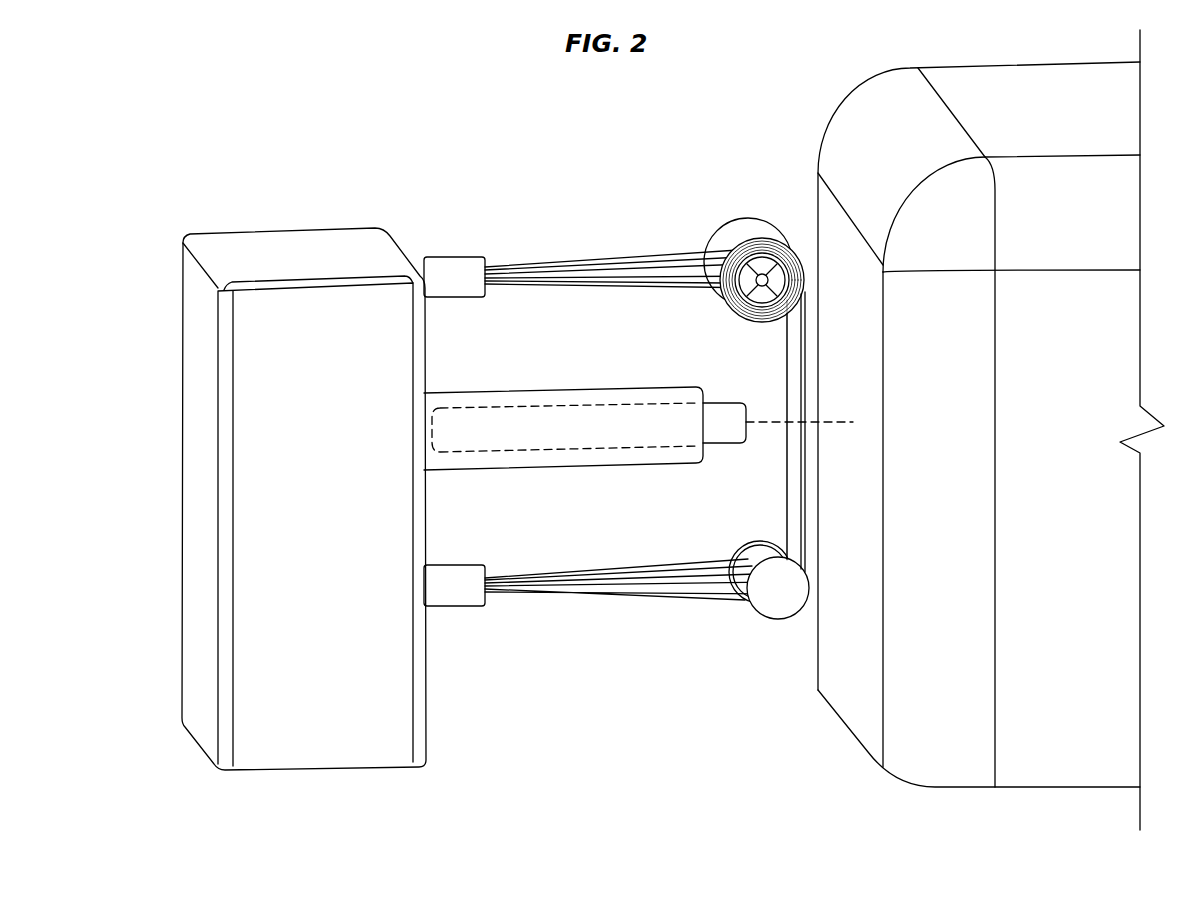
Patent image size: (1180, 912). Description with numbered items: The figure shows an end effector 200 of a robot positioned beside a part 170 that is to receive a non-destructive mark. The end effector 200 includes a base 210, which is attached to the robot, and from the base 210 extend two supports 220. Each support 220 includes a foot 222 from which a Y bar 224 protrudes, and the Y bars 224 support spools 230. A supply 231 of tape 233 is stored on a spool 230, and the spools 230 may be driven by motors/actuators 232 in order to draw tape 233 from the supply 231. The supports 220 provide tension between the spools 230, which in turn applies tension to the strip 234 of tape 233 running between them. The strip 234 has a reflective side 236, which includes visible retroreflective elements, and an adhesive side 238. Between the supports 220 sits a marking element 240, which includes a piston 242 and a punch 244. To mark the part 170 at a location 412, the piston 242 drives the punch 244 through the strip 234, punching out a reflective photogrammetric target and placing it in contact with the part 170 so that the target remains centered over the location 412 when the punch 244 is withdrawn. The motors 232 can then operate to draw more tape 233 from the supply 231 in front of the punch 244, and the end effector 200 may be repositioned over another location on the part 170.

The part 170 is at (825, 130).
The end effector 200 is at (296, 118).
The base 210 is at (340, 229).
The supports 220 is at (601, 414).
The foot 222 is at (463, 256).
The Y bar 224 is at (613, 256).
The spools 230 is at (791, 418).
The supply 231 is at (806, 240).
The motors/actuators 232 is at (768, 304).
The tape 233 is at (725, 359).
The strip 234 is at (786, 488).
The reflective side 236 is at (768, 452).
The adhesive side 238 is at (778, 432).
The marking element 240 is at (601, 439).
The piston 242 is at (576, 387).
The punch 244 is at (720, 402).
The location 412 is at (846, 423).